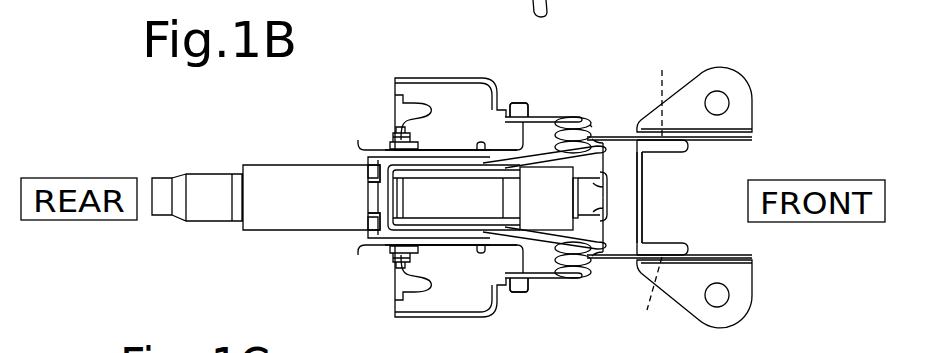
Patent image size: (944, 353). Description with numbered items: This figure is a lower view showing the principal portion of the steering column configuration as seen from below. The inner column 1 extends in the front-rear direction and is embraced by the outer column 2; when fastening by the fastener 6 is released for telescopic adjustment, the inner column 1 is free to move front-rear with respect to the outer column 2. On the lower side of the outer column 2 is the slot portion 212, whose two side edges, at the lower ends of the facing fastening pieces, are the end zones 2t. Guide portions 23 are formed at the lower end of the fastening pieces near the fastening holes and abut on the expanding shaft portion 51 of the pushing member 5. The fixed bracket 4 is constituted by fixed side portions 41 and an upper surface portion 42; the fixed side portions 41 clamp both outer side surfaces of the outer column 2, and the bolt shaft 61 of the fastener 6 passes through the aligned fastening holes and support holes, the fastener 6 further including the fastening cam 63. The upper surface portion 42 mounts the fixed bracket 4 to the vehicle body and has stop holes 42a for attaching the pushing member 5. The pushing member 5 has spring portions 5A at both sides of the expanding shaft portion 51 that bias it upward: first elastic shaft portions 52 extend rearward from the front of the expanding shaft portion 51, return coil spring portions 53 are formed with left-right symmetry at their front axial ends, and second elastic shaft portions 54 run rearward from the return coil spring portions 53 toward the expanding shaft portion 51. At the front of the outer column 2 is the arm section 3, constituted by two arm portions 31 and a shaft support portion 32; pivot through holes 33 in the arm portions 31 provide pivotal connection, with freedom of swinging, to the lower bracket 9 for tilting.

The inner column 1 is at (294, 160).
The end zones 2t is at (338, 208).
The outer column 2 is at (357, 219).
The slot portion 212 is at (372, 200).
The guide portions 23 is at (342, 210).
The bolt shaft 61 is at (376, 186).
The fastening cam 63 is at (392, 143).
The fastener 6 is at (388, 263).
The upper surface portion 42 is at (446, 77).
The fixed bracket 4 is at (485, 68).
The fixed side portions 41 is at (440, 150).
The stop holes 42a is at (510, 110).
The second elastic shaft portions 54 is at (538, 118).
The pushing member 5 is at (553, 106).
The spring portions 5A is at (579, 110).
The return coil spring portions 53 is at (591, 126).
The arm section 3 is at (618, 128).
The arm portions 31 is at (668, 151).
The shaft support portion 32 is at (632, 229).
The pivot through holes 33 is at (654, 189).
The lower bracket 9 is at (730, 117).
The expanding shaft portion 51 is at (405, 190).
The first elastic shaft portions 52 is at (507, 168).